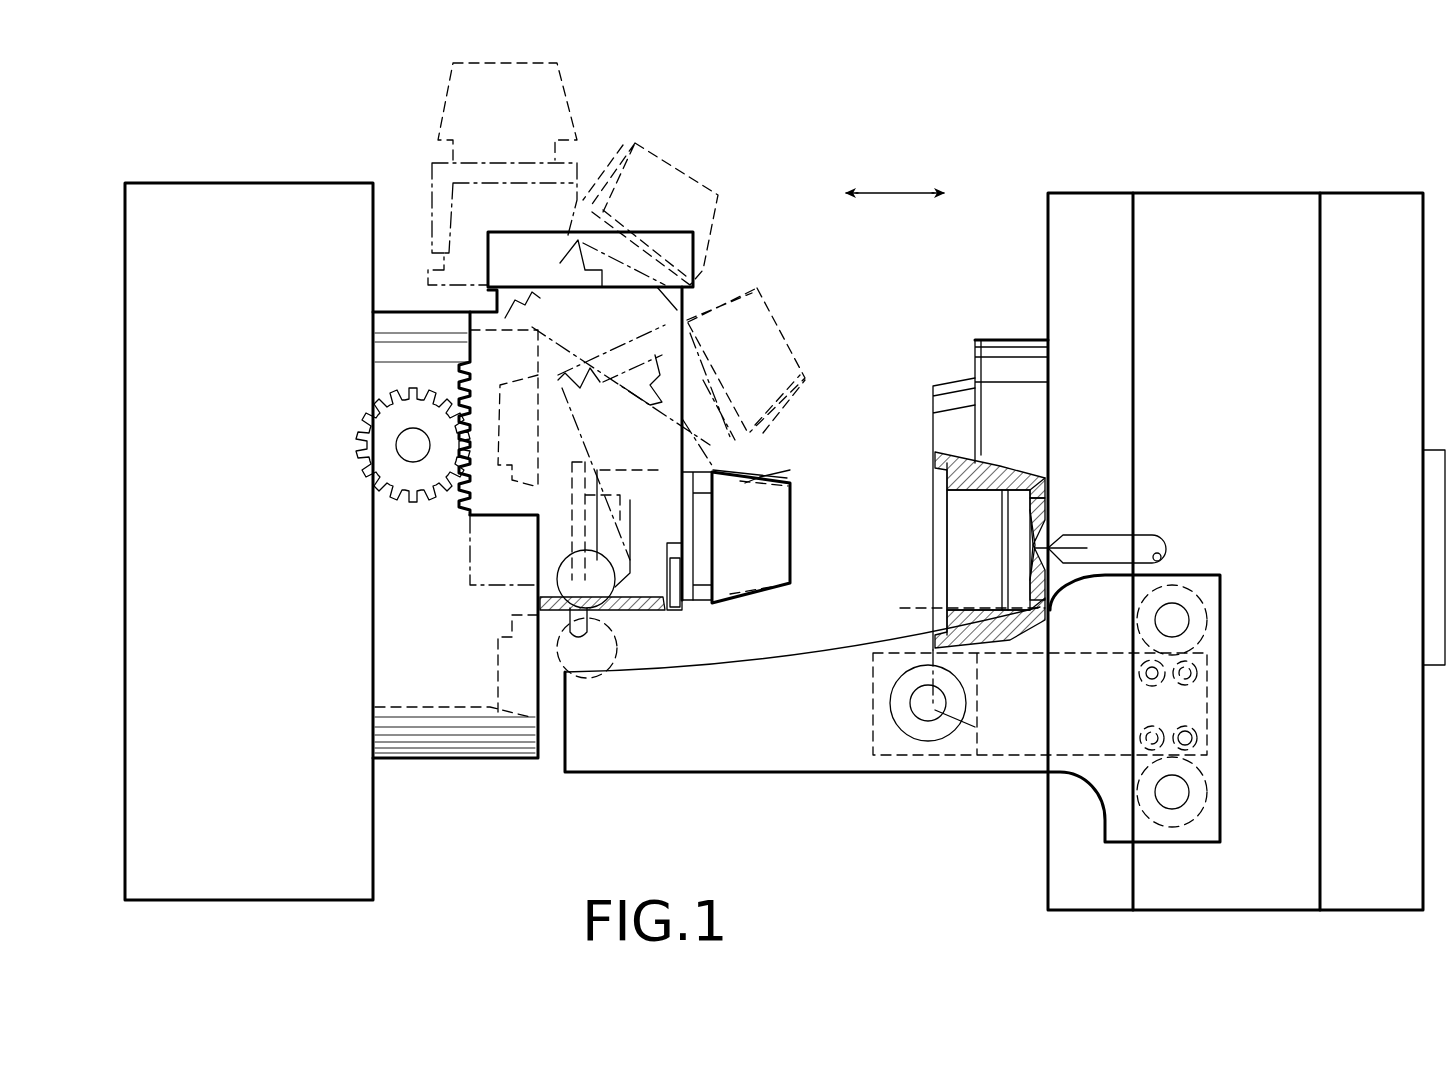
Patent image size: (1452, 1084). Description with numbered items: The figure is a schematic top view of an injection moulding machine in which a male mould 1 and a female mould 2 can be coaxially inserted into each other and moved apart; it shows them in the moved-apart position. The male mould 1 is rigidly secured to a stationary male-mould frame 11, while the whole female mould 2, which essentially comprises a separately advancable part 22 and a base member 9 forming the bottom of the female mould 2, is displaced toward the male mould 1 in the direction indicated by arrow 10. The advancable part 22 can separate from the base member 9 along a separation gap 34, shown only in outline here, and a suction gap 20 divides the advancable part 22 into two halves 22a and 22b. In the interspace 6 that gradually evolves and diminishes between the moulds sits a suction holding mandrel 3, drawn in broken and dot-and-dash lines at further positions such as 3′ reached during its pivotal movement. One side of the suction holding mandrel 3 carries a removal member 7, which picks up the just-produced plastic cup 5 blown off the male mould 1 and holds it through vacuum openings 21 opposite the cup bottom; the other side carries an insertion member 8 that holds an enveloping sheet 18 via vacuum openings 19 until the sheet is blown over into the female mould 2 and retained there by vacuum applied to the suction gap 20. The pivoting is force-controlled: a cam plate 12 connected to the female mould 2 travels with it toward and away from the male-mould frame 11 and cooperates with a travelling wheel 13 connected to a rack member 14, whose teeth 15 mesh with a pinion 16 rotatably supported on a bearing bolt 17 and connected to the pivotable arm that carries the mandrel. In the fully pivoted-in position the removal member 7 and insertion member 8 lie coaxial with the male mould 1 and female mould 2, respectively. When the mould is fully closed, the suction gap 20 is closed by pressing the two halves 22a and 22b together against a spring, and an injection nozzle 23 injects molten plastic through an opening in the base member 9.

The male mould 1 is at (538, 603).
The female mould 2 is at (937, 532).
The suction holding mandrel 3 is at (805, 466).
The position of suction holding mandrel 3′ is at (790, 312).
The plastic cup 5 is at (468, 215).
The interspace 6 is at (892, 578).
The removal member 7 is at (675, 620).
The insertion member 8 is at (752, 612).
The base member 9 is at (1052, 507).
The arrow 10 is at (893, 190).
The male-mould frame 11 is at (254, 563).
The cam plate 12 is at (828, 705).
The travelling wheel 13 is at (598, 640).
The rack member 14 is at (492, 500).
The teeth 15 is at (465, 383).
The pinion 16 is at (385, 437).
The bearing bolt 17 is at (413, 445).
The enveloping sheet 18 is at (760, 477).
The vacuum openings 19 is at (747, 483).
The suction gap 20 is at (1005, 490).
The vacuum openings 21 is at (697, 552).
The advancable part 22 is at (984, 337).
The half of advancable part 22a is at (950, 384).
The half of advancable part 22b is at (1025, 340).
The injection nozzle 23 is at (1105, 550).
The separation gap 34 is at (1047, 462).